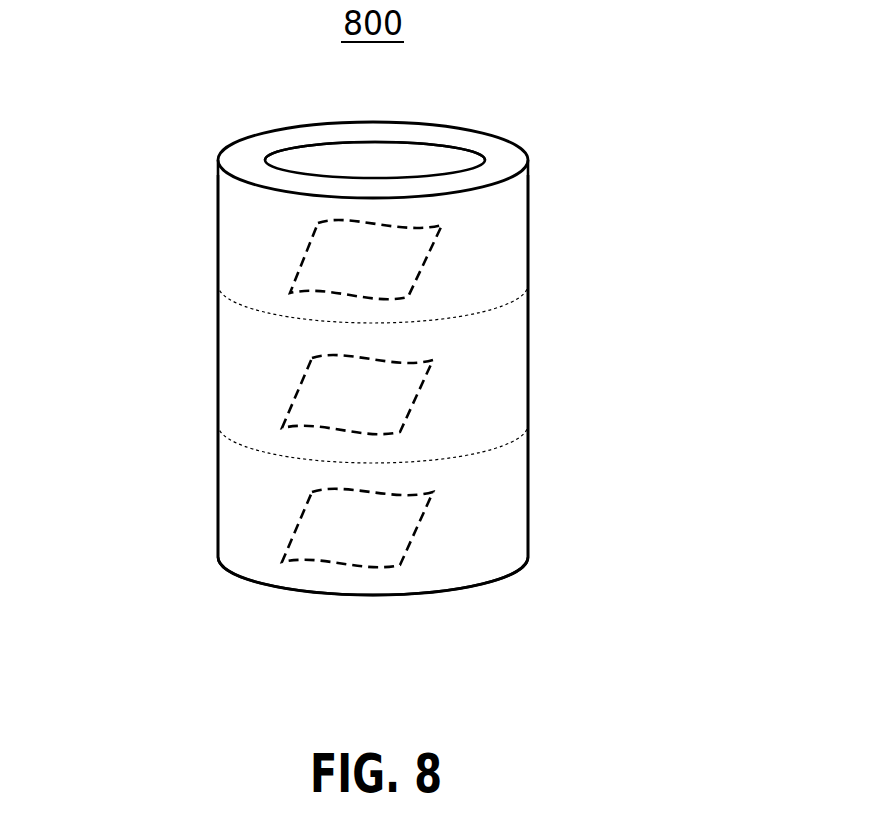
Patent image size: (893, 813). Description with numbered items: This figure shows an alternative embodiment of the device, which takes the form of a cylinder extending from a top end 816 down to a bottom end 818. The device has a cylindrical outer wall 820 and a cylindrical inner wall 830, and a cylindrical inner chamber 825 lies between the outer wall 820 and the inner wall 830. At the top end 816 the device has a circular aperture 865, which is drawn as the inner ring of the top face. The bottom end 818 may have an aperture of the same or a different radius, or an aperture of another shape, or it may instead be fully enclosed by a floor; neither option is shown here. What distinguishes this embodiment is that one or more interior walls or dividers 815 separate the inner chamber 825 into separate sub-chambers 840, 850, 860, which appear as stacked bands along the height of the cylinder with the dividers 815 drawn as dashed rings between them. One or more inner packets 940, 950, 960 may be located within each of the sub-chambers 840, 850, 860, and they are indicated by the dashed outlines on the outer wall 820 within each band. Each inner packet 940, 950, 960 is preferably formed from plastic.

The interior wall 815 is at (500, 305).
The top end 816 is at (528, 162).
The bottom end 818 is at (485, 583).
The cylindrical outer wall 820 is at (237, 210).
The cylindrical inner chamber 825 is at (487, 203).
The cylindrical inner wall 830 is at (412, 160).
The sub-chamber 840 is at (487, 252).
The sub-chamber 850 is at (487, 395).
The sub-chamber 860 is at (500, 527).
The circular aperture 865 is at (327, 143).
The inner packet 940 is at (305, 262).
The inner packet 950 is at (297, 395).
The inner packet 960 is at (297, 530).